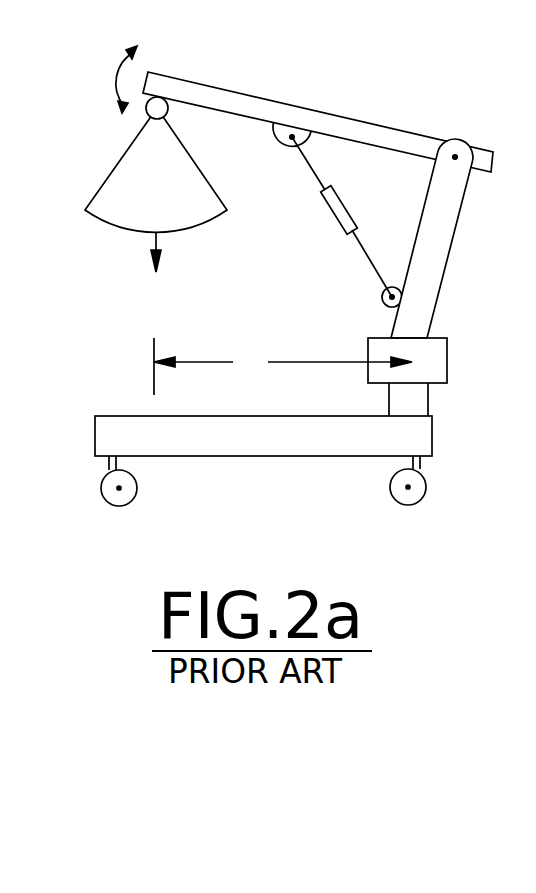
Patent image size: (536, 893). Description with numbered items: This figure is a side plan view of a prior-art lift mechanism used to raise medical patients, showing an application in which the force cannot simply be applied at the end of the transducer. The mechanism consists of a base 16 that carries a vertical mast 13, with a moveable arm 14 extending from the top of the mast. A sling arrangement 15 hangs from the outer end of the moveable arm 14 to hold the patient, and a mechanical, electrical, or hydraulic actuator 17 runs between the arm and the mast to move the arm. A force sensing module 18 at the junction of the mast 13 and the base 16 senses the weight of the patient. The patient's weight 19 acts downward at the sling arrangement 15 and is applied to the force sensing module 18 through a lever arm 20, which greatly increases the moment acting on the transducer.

The vertical mast 13 is at (457, 233).
The moveable arm 14 is at (278, 102).
The sling arrangement 15 is at (112, 160).
The base 16 is at (327, 456).
The actuator 17 is at (328, 210).
The force sensing module 18 is at (440, 358).
The weight 19 is at (143, 290).
The lever arm 20 is at (260, 368).